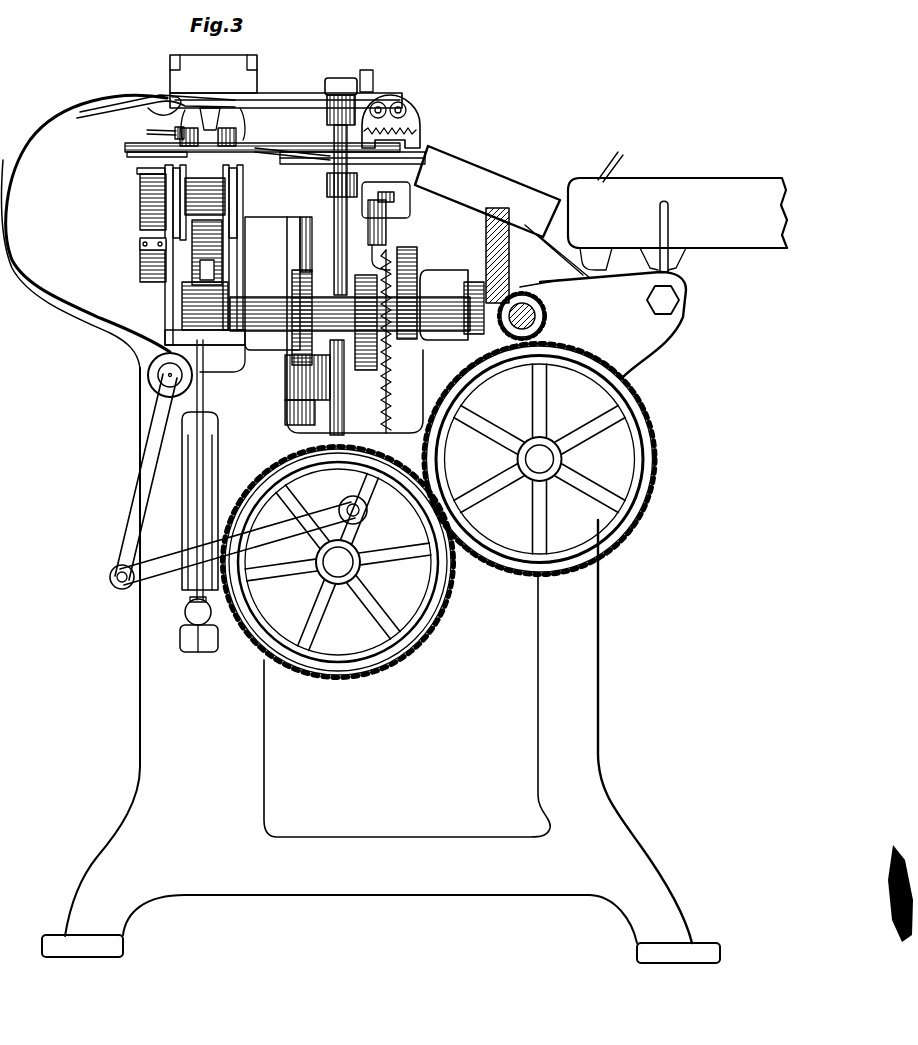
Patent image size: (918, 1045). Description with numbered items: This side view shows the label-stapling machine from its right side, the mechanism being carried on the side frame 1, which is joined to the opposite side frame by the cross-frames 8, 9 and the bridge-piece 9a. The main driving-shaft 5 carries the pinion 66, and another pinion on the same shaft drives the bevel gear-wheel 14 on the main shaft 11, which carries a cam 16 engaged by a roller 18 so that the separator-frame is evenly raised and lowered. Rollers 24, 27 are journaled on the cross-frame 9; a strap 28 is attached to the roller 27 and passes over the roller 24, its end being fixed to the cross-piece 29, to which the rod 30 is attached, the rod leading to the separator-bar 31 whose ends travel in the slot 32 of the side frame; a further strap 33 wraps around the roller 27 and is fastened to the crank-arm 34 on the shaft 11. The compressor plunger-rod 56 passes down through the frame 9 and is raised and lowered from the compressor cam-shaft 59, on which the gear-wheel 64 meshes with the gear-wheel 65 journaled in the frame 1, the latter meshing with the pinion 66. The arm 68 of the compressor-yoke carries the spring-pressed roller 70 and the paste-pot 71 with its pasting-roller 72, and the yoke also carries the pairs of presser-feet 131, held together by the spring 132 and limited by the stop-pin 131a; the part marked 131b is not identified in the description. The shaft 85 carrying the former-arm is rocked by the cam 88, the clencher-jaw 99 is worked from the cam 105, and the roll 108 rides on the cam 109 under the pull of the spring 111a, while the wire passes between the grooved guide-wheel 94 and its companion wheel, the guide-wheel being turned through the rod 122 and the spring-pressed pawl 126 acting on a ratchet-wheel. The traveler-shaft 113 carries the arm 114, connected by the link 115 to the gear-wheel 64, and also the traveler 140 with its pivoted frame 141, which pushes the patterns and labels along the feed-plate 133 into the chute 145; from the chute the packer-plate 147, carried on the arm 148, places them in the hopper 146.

The side frame 1 is at (381, 617).
The main driving-shaft 5 is at (537, 320).
The cross-frame 8 is at (452, 305).
The cross-frame 9 is at (248, 285).
The bridge-piece 9a is at (313, 244).
The main shaft 11 is at (330, 310).
The bevel gear-wheel 14 is at (504, 252).
The cam 16 is at (195, 306).
The roller 18 is at (228, 262).
The roller 24 is at (251, 192).
The roller 27 is at (140, 182).
The strap 28 is at (236, 256).
The cross-piece 29 is at (216, 348).
The rod 30 is at (203, 470).
The separator-bar 31 is at (190, 630).
The slot 32 is at (210, 490).
The strap 33 is at (148, 200).
The crank-arm 34 is at (142, 262).
The compressor plunger-rod 56 is at (336, 218).
The compressor cam-shaft 59 is at (338, 562).
The gear-wheel 64 is at (410, 655).
The gear-wheel 65 is at (652, 508).
The pinion 66 is at (548, 312).
The arm 68 is at (283, 103).
The spring-pressed roller 70 is at (170, 130).
The paste-pot 71 is at (213, 74).
The pasting-roller 72 is at (216, 110).
The shaft 85 is at (395, 218).
The cam 88 is at (295, 310).
The grooved guide-wheel 94 is at (300, 190).
The clencher-jaw 99 is at (400, 197).
The cam 105 is at (385, 370).
The roll 108 is at (408, 255).
The cam 109 is at (375, 360).
The spring 111a is at (396, 402).
The traveler-shaft 113 is at (168, 376).
The arm 114 is at (138, 481).
The link 115 is at (243, 540).
The rod 122 is at (340, 385).
The spring-pressed pawl 126 is at (313, 377).
The presser-feet 131 is at (420, 122).
The stop-pin 131a is at (410, 108).
The roller 131b is at (425, 136).
The spring 132 is at (416, 155).
The feed-plate 133 is at (282, 94).
The traveler 140 is at (14, 183).
The frame 141 is at (92, 115).
The chute 145 is at (573, 218).
The hopper 146 is at (677, 224).
The packer-plate 147 is at (612, 168).
The arm 148 is at (572, 276).